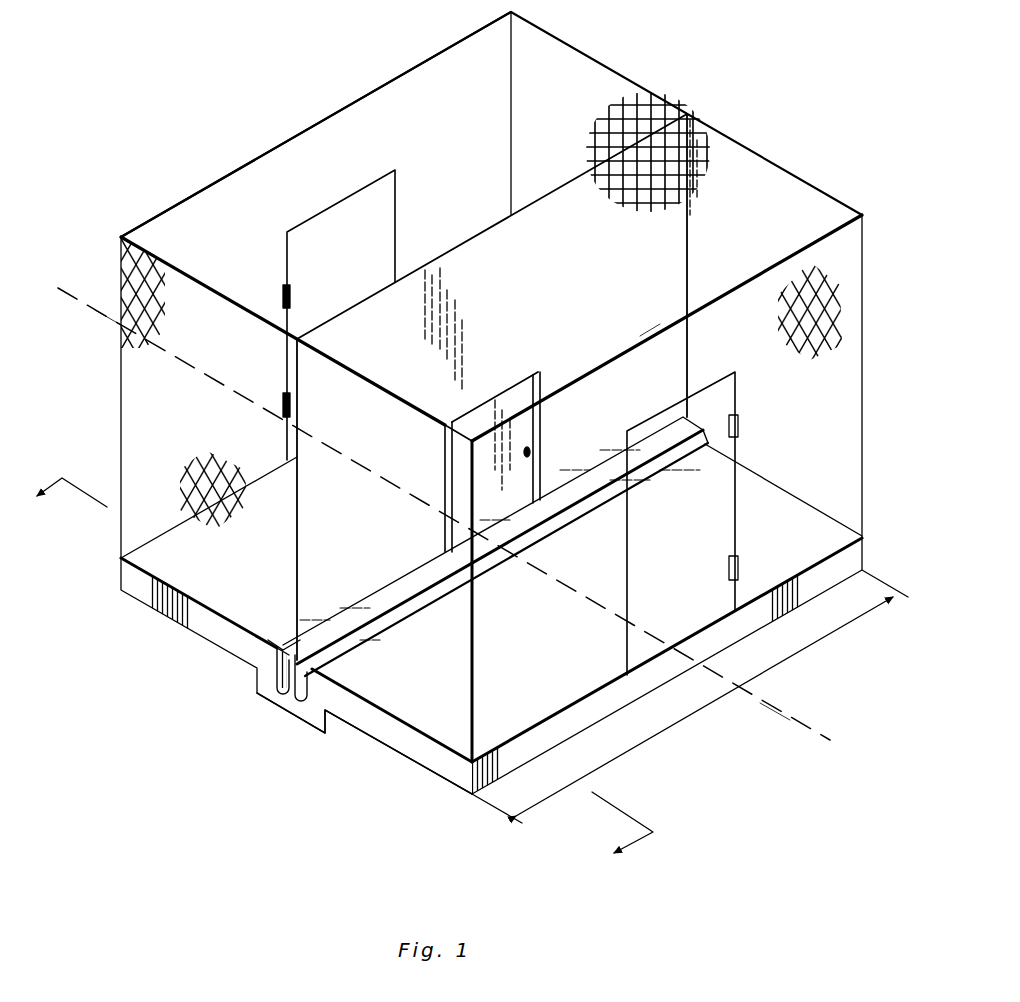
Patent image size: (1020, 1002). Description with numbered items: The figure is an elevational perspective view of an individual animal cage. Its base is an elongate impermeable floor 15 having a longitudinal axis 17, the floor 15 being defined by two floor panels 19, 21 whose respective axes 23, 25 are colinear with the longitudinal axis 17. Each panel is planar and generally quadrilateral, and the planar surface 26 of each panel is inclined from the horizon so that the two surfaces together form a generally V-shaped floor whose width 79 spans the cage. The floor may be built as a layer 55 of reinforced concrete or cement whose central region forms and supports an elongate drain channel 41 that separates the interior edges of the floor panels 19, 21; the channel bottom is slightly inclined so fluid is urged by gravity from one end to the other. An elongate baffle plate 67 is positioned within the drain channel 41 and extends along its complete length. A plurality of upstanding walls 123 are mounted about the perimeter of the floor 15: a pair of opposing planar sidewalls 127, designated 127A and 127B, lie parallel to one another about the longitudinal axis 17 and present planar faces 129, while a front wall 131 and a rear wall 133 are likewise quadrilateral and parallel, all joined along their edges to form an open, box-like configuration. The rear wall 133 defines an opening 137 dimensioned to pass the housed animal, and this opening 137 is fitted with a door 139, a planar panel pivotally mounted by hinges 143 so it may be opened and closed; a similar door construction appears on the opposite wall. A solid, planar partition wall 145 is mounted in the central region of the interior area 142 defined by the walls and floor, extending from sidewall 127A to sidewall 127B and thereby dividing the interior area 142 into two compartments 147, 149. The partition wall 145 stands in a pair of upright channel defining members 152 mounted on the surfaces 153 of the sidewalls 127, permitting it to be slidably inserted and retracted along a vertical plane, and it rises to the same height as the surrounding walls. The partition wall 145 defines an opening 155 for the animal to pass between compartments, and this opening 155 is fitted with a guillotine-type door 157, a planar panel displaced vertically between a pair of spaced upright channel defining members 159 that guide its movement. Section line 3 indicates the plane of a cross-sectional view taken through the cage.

The upstanding walls 123 is at (398, 72).
The rear wall 133 is at (268, 146).
The planar surface 26 is at (159, 563).
The layer of concrete or cement 55 is at (393, 745).
The sidewalls 127 is at (757, 152).
The sidewall 127B is at (665, 102).
The sidewall 127A is at (338, 364).
The channel defining members 152 is at (685, 222).
The opening 137 is at (377, 182).
The hinges 143 is at (283, 297).
The door 139 is at (326, 248).
The channel defining members 159 is at (446, 458).
The door 157 is at (527, 376).
The opening 155 is at (530, 443).
The baffle plate 67 is at (352, 618).
The drain channel 41 is at (290, 666).
The compartment 147 is at (468, 216).
The compartment 149 is at (658, 307).
The interior area 142 is at (443, 424).
The front wall 131 is at (650, 336).
The surfaces 153 is at (713, 196).
The partition wall 145 is at (478, 273).
The planar faces 129 is at (708, 256).
The floor 15 is at (213, 559).
The floor panel 21 is at (238, 596).
The floor panel 19 is at (500, 666).
The longitudinal axis 17 is at (60, 287).
The axis 23 is at (118, 322).
The axis 25 is at (770, 706).
The section arrow 3 is at (339, 674).
The width 79 is at (747, 693).